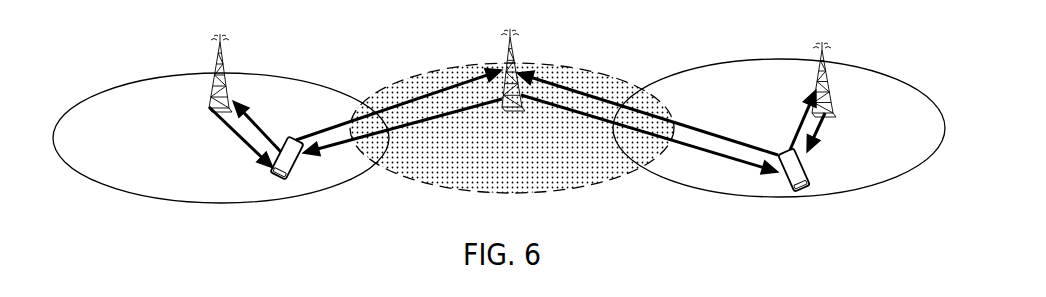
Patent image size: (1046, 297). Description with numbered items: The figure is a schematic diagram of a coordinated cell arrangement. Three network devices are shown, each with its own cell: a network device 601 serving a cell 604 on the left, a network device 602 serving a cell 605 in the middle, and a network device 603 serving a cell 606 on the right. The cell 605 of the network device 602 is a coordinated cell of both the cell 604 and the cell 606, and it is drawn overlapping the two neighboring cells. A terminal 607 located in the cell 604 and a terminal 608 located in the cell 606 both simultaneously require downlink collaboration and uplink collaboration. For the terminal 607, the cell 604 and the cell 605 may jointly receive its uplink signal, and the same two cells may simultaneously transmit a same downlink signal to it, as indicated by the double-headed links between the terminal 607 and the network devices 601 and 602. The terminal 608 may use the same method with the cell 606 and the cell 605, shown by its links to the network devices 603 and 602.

The network device 601 is at (222, 72).
The network device 602 is at (517, 70).
The network device 603 is at (822, 73).
The cell 604 is at (313, 82).
The cell 605 is at (588, 74).
The cell 606 is at (715, 65).
The terminal 607 is at (293, 142).
The terminal 608 is at (810, 170).